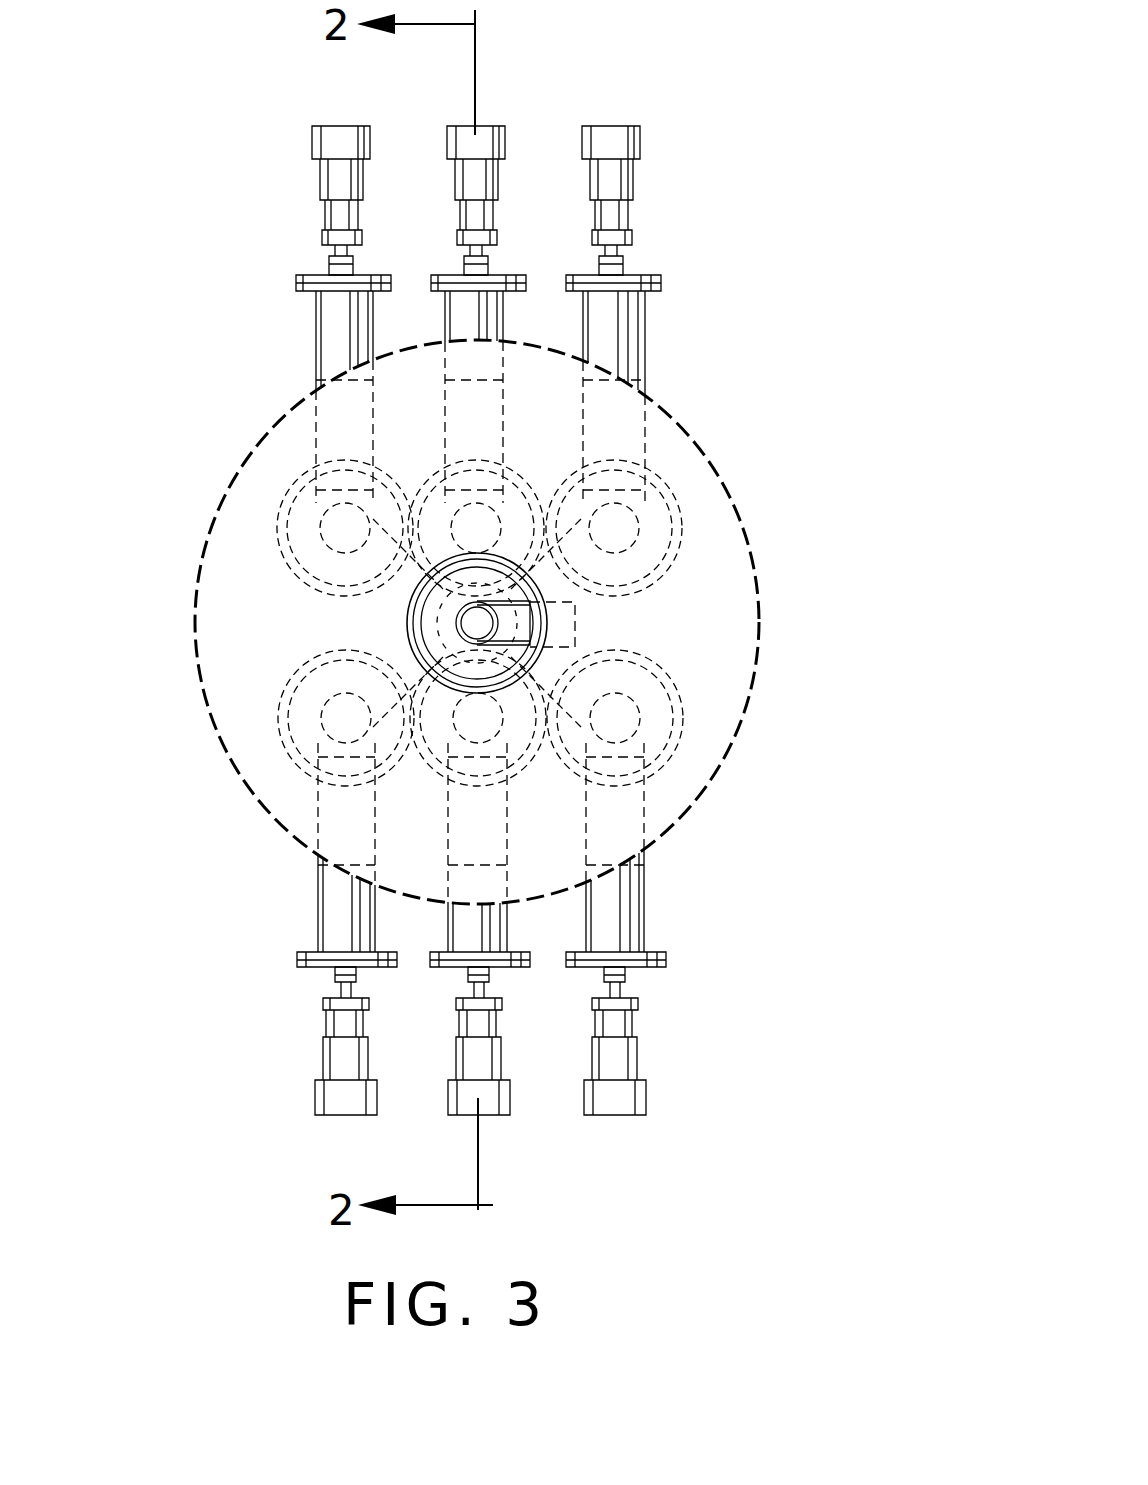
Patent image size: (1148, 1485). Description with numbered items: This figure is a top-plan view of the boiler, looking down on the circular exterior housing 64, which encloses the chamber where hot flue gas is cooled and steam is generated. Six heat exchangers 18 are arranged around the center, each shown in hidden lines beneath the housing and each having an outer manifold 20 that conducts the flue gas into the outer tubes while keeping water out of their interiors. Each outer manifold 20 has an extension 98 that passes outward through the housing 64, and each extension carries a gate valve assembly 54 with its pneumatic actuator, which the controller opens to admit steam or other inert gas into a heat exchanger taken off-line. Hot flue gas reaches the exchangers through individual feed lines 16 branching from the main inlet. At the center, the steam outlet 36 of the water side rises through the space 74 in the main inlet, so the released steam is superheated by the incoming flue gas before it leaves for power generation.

The feed line 16 is at (421, 583).
The heat exchanger 18 is at (420, 583).
The outer manifold 20 is at (300, 551).
The outlet 36 is at (477, 621).
The gate valve assembly 54 is at (335, 249).
The exterior housing 64 is at (707, 786).
The space 74 is at (440, 627).
The extension 98 is at (328, 332).